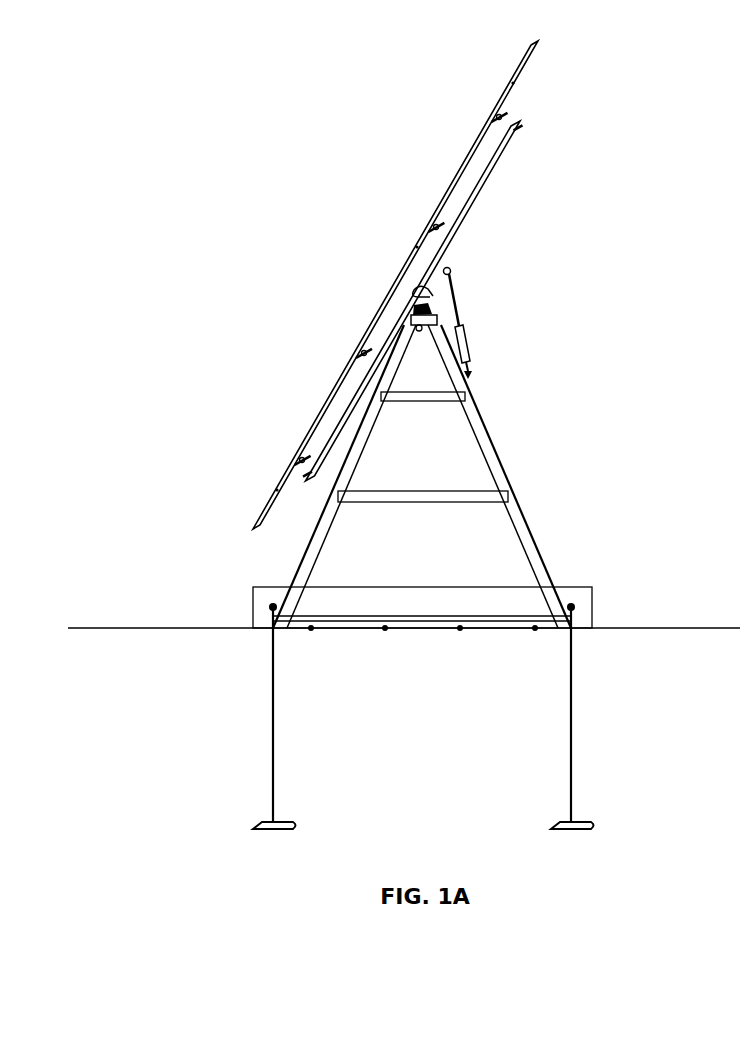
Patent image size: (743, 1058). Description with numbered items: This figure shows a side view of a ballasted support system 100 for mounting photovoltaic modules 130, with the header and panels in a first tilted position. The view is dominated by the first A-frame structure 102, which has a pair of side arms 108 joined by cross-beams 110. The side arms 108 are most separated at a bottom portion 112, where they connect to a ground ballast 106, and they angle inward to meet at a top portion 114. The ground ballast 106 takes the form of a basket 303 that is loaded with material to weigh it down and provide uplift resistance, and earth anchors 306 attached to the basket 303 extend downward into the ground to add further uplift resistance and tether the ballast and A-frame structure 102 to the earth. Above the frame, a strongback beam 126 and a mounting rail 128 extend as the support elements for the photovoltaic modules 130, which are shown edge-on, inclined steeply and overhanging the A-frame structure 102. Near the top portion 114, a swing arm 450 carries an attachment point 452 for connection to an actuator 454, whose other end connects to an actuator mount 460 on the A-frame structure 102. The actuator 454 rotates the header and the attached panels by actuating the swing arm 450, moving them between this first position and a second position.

The ballasted support system 100 is at (196, 106).
The first A-frame structure 102 is at (538, 509).
The ground ballast 106 is at (240, 600).
The side arms 108 is at (497, 460).
The cross-beams 110 is at (427, 401).
The bottom portion 112 is at (290, 612).
The top portion 114 is at (410, 318).
The strongback beams 126 is at (492, 172).
The mounting rails 128 is at (509, 113).
The photovoltaic modules 130 is at (472, 156).
The basket 303 is at (594, 602).
The earth anchors 306 is at (276, 736).
The swing arm 450 is at (430, 293).
The attachment point 452 is at (452, 268).
The actuator 454 is at (467, 348).
The actuator mount 460 is at (471, 372).